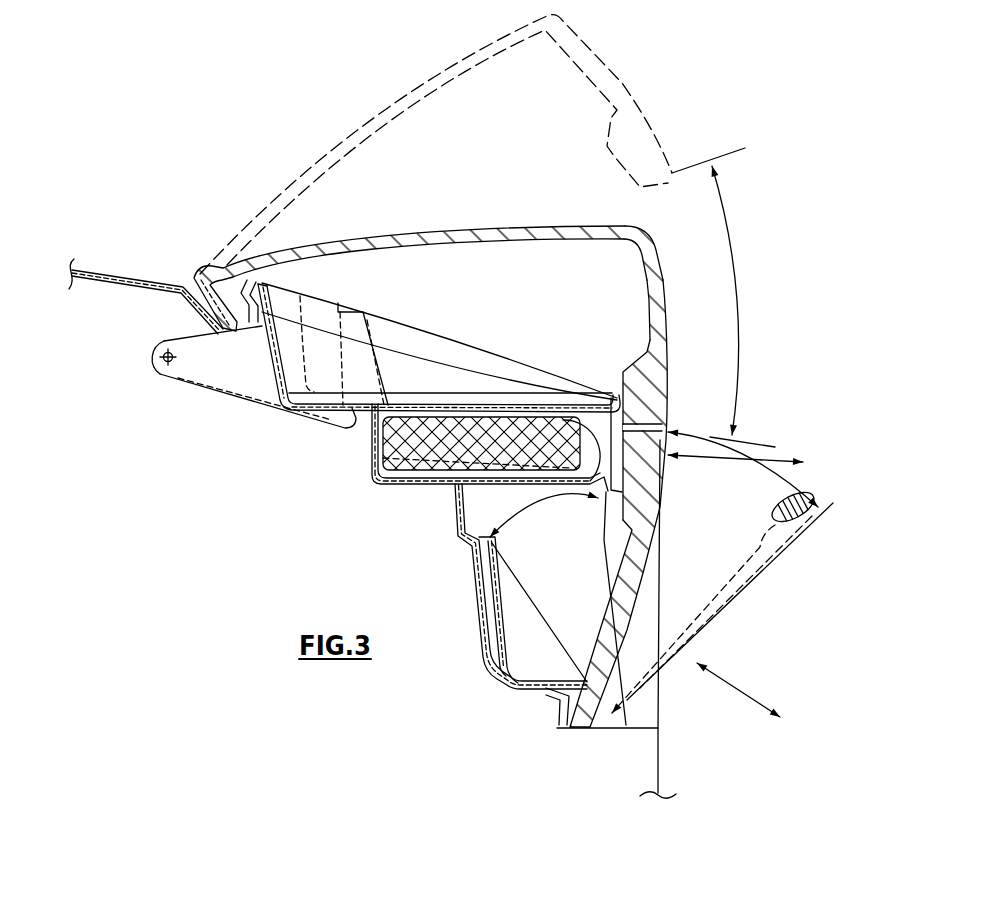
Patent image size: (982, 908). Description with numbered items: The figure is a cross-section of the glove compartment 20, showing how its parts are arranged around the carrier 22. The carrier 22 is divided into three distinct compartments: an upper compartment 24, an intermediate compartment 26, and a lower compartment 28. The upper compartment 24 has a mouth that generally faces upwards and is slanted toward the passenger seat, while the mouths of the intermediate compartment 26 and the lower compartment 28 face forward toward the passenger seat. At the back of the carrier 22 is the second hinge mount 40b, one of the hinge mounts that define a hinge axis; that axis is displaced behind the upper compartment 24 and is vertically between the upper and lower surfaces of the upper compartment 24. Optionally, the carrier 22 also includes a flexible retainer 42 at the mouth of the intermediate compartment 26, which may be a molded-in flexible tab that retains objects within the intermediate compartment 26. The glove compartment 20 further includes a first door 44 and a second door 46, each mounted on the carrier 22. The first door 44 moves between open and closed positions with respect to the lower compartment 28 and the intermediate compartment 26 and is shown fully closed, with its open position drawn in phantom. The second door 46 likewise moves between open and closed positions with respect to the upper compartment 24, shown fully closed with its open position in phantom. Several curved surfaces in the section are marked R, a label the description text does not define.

The glove compartment 20 is at (344, 474).
The carrier 22 is at (348, 476).
The upper compartment 24 is at (520, 350).
The intermediate compartment 26 is at (630, 427).
The lower compartment 28 is at (575, 613).
The second hinge mount 40b is at (230, 393).
The flexible retainer 42 is at (658, 473).
The first door 44 is at (656, 557).
The second door 46 is at (641, 228).
The radius R is at (152, 343).